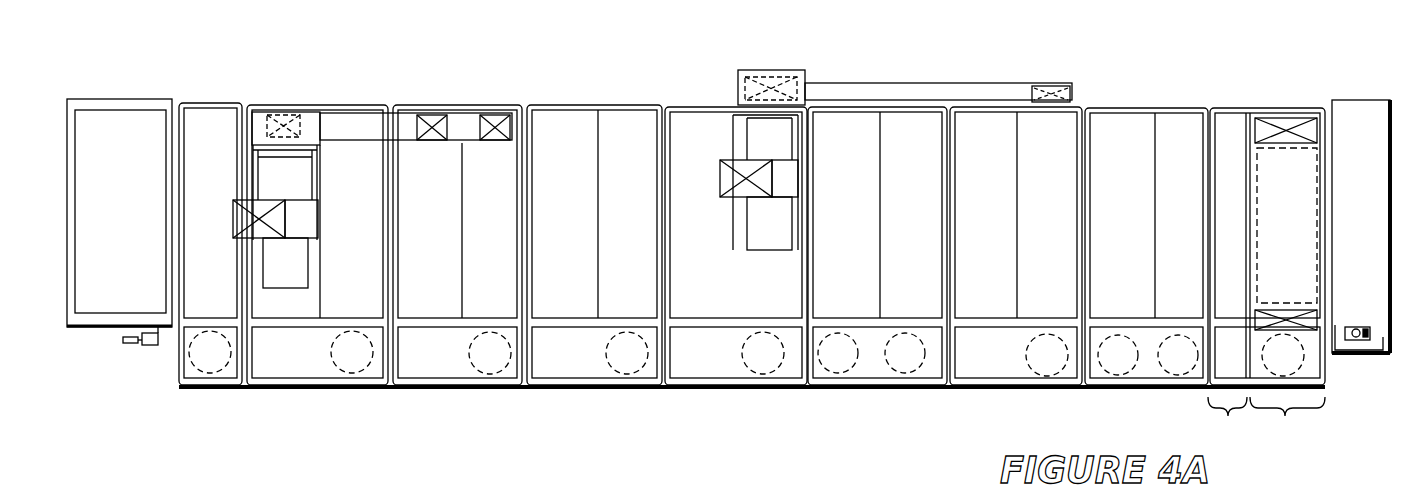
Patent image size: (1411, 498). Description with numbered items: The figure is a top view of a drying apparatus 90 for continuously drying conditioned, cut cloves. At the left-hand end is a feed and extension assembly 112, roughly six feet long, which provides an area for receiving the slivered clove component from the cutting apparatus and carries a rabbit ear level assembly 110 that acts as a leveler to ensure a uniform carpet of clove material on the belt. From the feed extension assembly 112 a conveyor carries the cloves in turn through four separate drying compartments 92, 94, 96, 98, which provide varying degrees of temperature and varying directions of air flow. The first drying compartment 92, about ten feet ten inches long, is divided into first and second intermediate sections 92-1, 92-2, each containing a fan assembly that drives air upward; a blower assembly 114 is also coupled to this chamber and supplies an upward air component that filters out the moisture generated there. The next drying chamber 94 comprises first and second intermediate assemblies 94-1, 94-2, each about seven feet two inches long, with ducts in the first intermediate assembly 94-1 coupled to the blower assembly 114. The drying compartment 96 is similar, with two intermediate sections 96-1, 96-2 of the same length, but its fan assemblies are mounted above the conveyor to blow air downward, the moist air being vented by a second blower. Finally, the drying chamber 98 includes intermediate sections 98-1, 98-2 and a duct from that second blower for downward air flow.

The drying apparatus 90 is at (727, 263).
The drying compartment 92 is at (390, 90).
The first intermediate section 92-1 is at (245, 397).
The second intermediate section 92-2 is at (388, 397).
The drying chamber 94 is at (663, 93).
The first intermediate assembly 94-1 is at (523, 397).
The second intermediate assembly 94-2 is at (658, 397).
The drying compartment 96 is at (950, 78).
The first intermediate section 96-1 is at (805, 397).
The second intermediate section 96-2 is at (947, 397).
The drying chamber 98 is at (1210, 78).
The first intermediate section 98-1 is at (1080, 397).
The second intermediate section 98-2 is at (1205, 397).
The rabbit ear level assembly 110 is at (155, 345).
The feed and extension assembly 112 is at (168, 397).
The blower assembly 114 is at (752, 442).